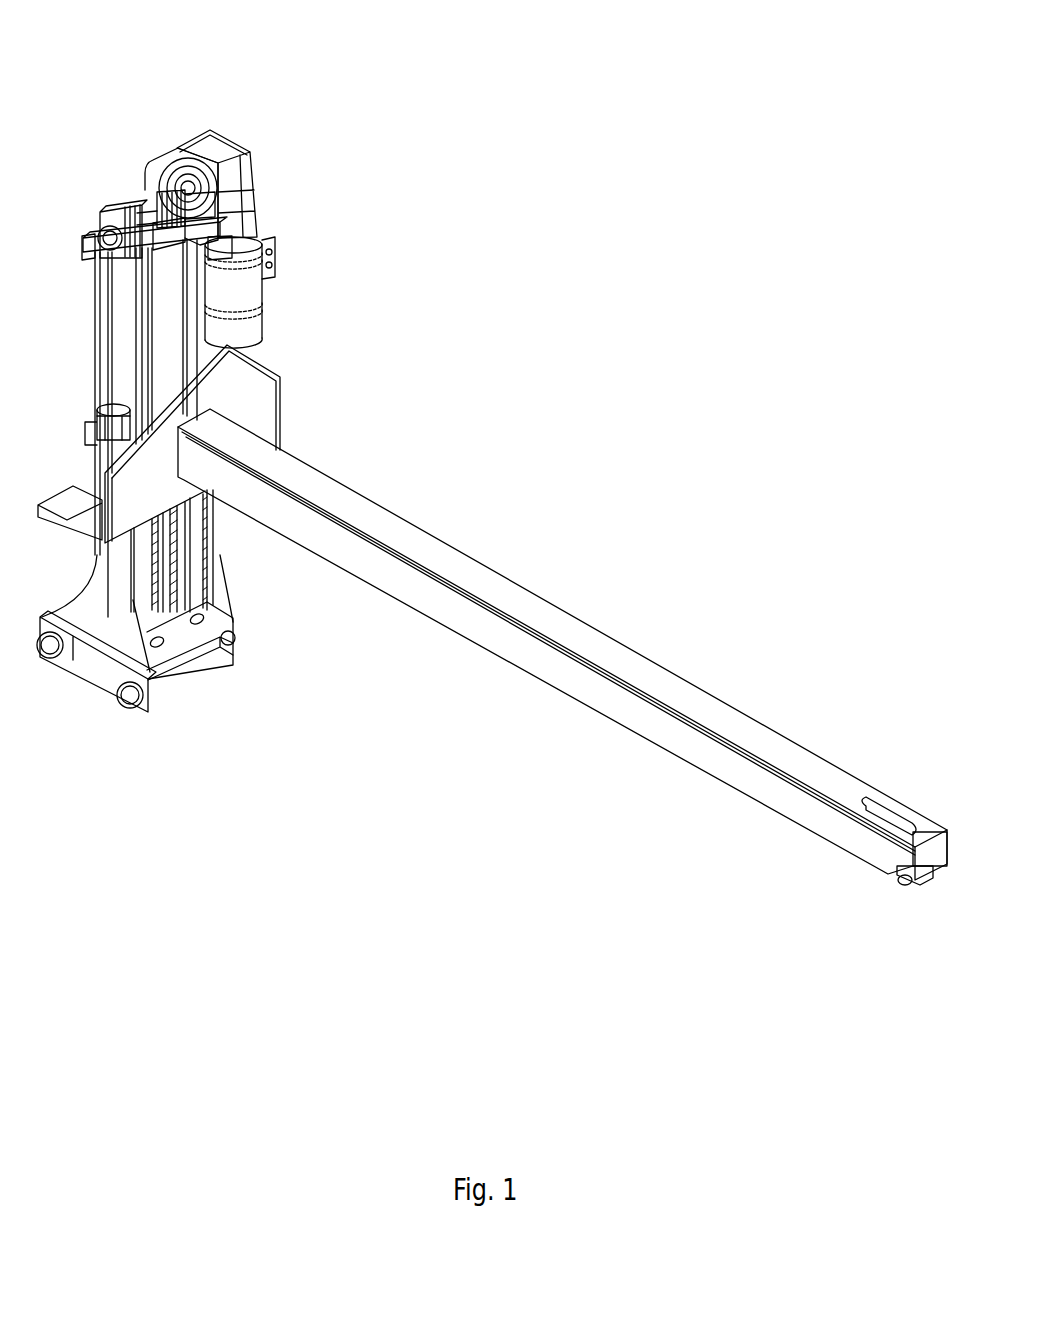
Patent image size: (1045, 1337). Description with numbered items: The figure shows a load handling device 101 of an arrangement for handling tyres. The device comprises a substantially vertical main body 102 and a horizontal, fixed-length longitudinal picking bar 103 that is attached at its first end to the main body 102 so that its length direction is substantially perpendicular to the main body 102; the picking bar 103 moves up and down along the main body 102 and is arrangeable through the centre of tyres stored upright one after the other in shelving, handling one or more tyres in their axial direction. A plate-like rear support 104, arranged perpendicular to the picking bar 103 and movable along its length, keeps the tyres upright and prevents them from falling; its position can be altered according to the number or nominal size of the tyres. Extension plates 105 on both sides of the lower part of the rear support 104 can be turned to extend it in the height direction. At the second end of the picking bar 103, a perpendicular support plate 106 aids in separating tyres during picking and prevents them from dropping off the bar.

The load handling device 101 is at (676, 204).
The main body 102 is at (123, 617).
The longitudinal picking bar 103 is at (435, 560).
The rear support 104 is at (268, 410).
The extension plates 105 is at (70, 502).
The support plate 106 is at (940, 843).